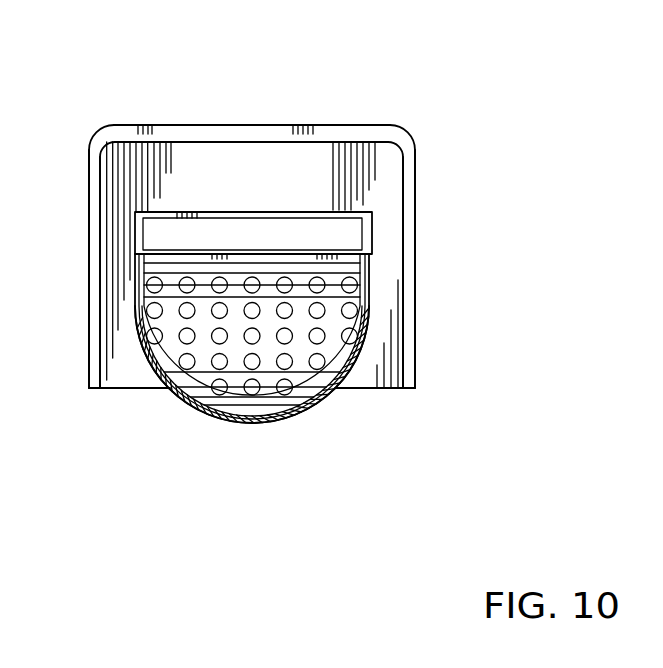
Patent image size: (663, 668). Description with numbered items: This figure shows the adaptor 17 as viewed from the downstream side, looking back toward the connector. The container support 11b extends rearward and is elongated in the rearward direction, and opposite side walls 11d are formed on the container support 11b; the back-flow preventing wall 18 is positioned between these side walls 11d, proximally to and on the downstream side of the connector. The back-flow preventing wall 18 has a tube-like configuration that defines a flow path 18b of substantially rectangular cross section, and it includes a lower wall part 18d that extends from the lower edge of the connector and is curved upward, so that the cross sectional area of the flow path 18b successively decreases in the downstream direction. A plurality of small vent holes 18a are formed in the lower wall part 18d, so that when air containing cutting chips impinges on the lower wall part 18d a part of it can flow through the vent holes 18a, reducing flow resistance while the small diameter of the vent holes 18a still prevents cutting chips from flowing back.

The container support 11b is at (223, 127).
The side walls 11d is at (409, 325).
The adaptor 17 is at (289, 116).
The back-flow preventing wall 18 is at (272, 422).
The vent holes 18a is at (269, 375).
The flow path 18b is at (253, 233).
The lower wall part 18d is at (357, 368).